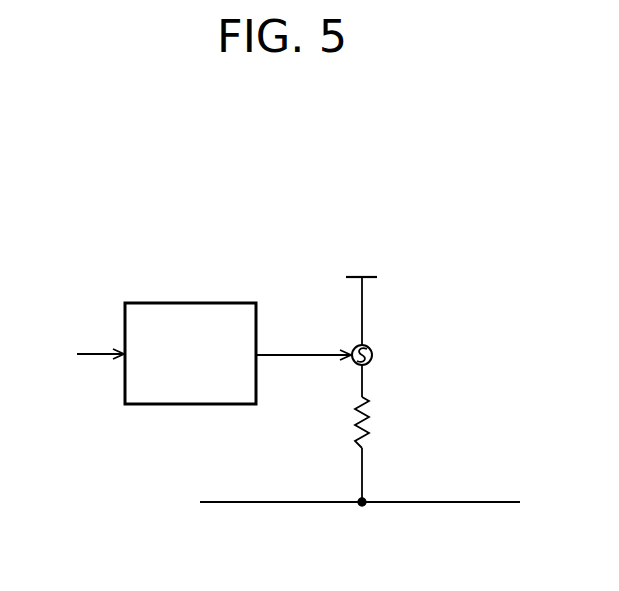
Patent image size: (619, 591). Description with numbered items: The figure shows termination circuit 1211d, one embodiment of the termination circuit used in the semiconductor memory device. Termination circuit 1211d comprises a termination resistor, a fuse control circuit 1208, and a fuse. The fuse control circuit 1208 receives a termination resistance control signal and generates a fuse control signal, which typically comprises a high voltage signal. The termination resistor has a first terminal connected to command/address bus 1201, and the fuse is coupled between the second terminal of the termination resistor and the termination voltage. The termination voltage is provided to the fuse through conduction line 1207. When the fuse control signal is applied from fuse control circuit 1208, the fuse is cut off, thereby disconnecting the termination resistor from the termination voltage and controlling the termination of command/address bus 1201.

The termination circuit 1211d is at (395, 185).
The fuse control circuit 1208 is at (229, 303).
The conduction line 1207 is at (362, 302).
The command/address bus 1201 is at (279, 503).